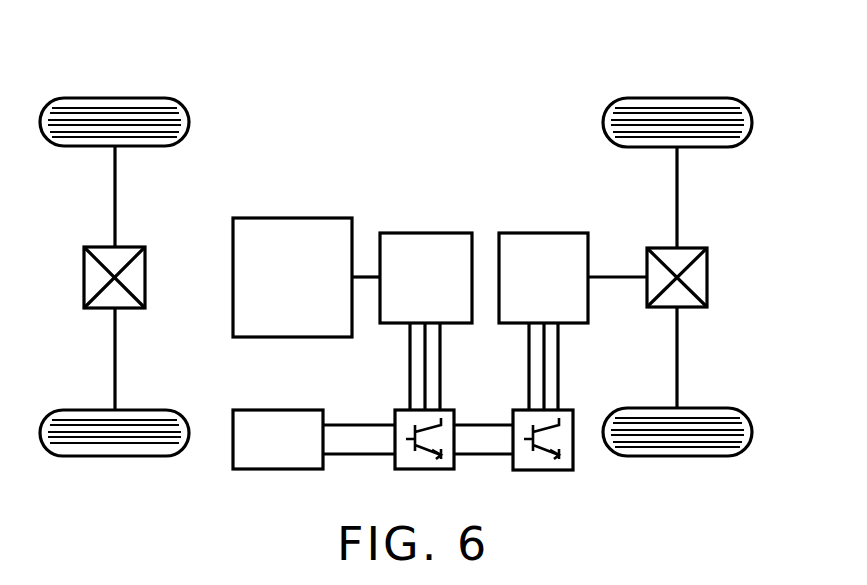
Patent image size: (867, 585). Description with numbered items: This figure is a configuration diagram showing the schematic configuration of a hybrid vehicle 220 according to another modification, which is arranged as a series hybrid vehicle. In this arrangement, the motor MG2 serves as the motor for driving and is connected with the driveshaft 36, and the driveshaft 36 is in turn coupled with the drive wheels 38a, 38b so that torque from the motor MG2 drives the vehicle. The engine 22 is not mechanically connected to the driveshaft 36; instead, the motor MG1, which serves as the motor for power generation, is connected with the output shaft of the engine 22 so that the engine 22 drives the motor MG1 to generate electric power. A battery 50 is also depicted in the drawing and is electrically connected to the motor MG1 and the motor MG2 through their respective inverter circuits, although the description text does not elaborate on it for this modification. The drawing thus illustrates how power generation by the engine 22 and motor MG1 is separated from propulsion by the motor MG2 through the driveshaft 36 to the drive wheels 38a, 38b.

The hybrid vehicle 220 is at (536, 80).
The engine 22 is at (293, 217).
The motor MG1 is at (428, 232).
The motor MG2 is at (544, 232).
The driveshaft 36 is at (618, 273).
The drive wheel 38a is at (677, 95).
The drive wheel 38b is at (677, 457).
The battery 50 is at (278, 410).